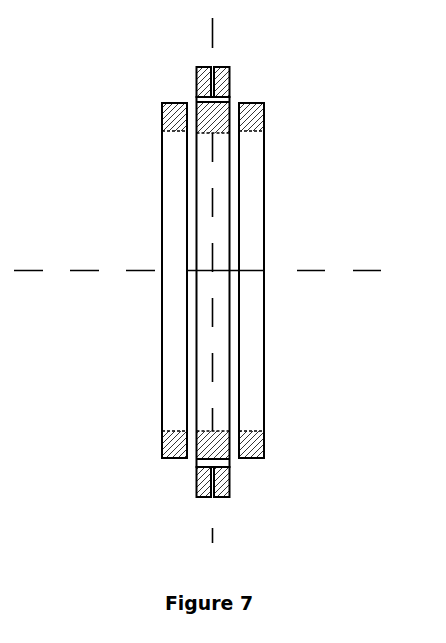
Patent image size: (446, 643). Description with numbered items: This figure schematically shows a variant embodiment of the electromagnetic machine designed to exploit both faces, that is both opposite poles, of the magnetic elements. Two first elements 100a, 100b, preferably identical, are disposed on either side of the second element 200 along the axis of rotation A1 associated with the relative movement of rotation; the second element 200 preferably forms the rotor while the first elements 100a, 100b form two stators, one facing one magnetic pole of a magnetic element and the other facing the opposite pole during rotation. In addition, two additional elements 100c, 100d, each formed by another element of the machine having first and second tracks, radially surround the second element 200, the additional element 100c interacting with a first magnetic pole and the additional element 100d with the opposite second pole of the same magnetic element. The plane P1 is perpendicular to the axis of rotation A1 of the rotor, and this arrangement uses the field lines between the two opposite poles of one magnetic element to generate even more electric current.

The first element 100a is at (170, 121).
The first element 100b is at (255, 118).
The additional element 100c is at (222, 76).
The additional element 100d is at (203, 80).
The second element 200 is at (206, 452).
The plane P1 is at (229, 274).
The axis of rotation A1 is at (202, 257).